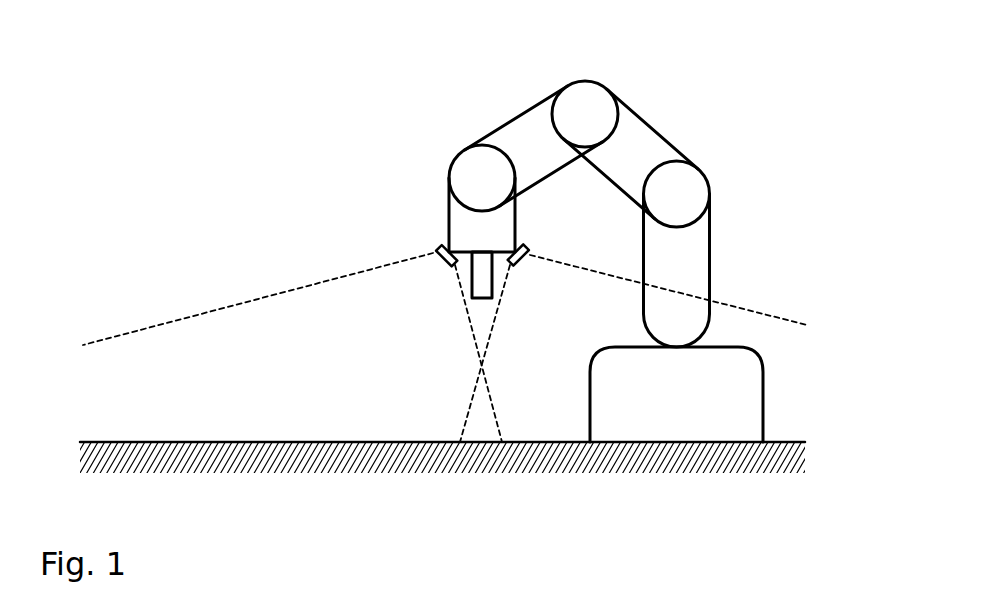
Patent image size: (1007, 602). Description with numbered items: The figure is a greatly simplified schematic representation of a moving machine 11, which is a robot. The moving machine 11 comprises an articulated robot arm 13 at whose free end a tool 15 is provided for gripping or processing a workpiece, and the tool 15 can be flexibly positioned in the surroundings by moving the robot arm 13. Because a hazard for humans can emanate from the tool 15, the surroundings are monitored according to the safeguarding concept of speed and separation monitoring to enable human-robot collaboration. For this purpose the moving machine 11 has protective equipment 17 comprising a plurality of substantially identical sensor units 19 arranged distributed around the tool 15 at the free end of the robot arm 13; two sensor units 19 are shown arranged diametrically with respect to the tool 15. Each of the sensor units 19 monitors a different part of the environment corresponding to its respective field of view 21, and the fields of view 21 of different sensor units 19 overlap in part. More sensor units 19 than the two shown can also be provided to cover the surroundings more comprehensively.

The moving machine 11 is at (693, 92).
The robot arm 13 is at (530, 127).
The tool 15 is at (482, 282).
The protective equipment 17 is at (430, 237).
The sensor units 19 is at (437, 249).
The fields of view 21 is at (387, 351).